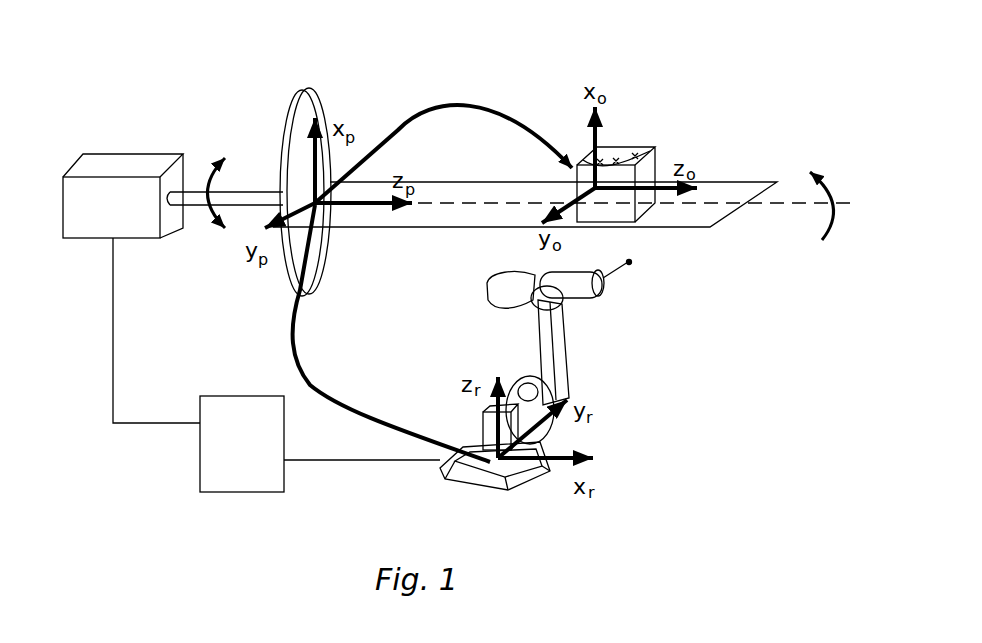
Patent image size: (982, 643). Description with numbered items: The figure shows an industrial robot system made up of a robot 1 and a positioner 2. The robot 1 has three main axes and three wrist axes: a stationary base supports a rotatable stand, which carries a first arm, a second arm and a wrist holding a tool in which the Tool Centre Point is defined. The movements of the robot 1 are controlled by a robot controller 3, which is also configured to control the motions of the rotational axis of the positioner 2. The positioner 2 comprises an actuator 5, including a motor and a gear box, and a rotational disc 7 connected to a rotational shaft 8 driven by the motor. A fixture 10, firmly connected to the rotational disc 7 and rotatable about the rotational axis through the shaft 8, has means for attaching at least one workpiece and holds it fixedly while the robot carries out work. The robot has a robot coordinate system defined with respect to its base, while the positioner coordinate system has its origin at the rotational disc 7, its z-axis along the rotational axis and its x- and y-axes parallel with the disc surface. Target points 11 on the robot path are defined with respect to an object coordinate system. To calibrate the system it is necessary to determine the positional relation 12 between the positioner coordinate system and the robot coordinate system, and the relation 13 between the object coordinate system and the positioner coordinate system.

The robot 1 is at (560, 338).
The positioner 2 is at (107, 135).
The robot controller 3 is at (250, 478).
The actuator 5 is at (90, 238).
The rotational disc 7 is at (316, 100).
The rotational shaft 8 is at (255, 192).
The fixture 10 is at (471, 188).
The target points 11 is at (626, 156).
The positional relation 12 is at (335, 398).
The relation 13 is at (462, 96).